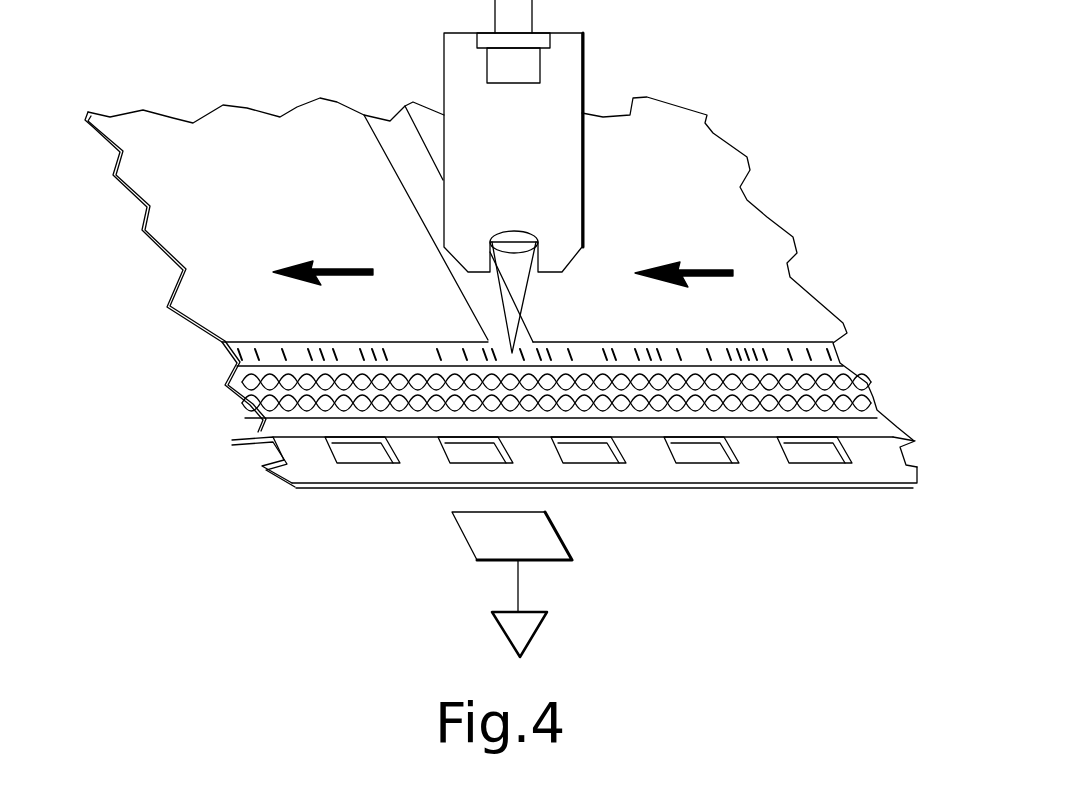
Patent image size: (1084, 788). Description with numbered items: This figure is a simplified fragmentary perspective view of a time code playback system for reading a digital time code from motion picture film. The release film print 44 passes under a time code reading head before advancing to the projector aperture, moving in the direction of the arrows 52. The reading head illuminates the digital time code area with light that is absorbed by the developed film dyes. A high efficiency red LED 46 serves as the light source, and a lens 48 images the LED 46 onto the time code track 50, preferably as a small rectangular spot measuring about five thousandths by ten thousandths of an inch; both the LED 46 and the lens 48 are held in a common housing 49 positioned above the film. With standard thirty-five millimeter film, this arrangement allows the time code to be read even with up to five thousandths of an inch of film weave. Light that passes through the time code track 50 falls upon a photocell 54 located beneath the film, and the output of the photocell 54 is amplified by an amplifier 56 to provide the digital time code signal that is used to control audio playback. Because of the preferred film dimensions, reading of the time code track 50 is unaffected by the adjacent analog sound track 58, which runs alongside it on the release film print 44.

The release film print 44 is at (805, 208).
The red LED 46 is at (487, 72).
The lens 48 is at (514, 231).
The housing 49 is at (583, 52).
The time code track 50 is at (812, 358).
The arrows 52 is at (348, 268).
The photocell 54 is at (558, 533).
The amplifier 56 is at (537, 633).
The analog sound track 58 is at (873, 398).